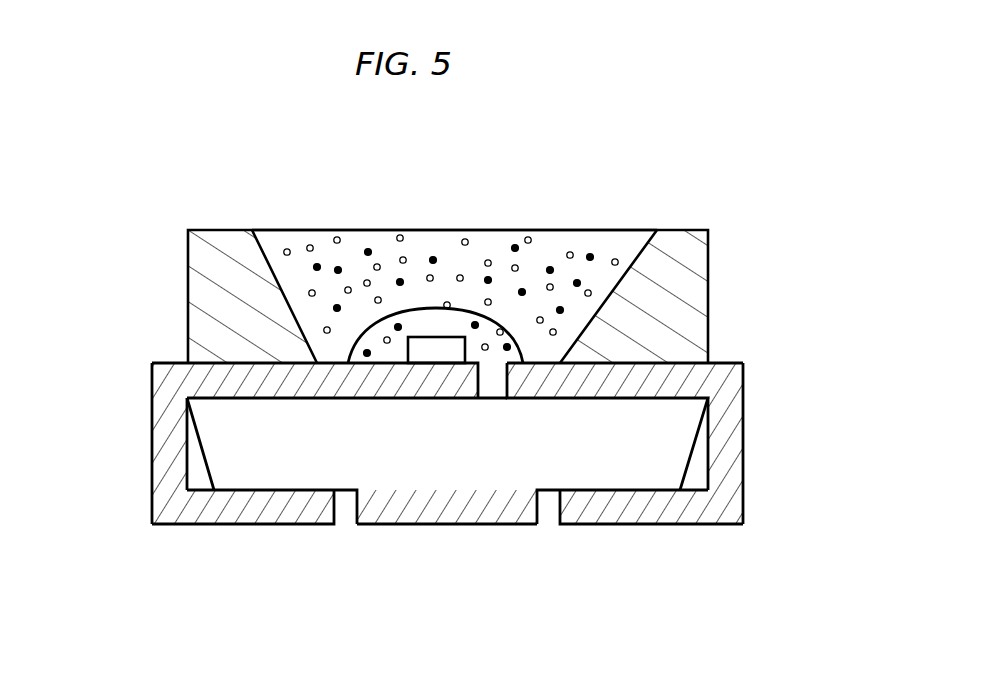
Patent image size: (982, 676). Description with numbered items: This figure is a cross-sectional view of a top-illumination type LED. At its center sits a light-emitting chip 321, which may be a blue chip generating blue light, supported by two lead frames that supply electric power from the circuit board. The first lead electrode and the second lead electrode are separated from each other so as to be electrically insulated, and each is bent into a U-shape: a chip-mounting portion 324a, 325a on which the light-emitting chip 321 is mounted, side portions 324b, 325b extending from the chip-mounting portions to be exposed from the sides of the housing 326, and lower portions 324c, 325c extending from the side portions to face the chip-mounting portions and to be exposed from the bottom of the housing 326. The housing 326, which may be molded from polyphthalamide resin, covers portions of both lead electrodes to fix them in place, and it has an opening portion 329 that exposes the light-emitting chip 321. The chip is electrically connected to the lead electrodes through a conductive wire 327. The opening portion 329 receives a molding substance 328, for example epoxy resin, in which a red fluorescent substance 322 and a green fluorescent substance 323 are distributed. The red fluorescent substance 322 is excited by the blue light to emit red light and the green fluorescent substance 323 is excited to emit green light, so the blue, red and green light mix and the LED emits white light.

The light-emitting chip 321 is at (428, 345).
The red fluorescent substance 322 is at (465, 240).
The green fluorescent substance 323 is at (515, 240).
The chip-mounting portion 324a is at (307, 383).
The side portion 324b is at (157, 440).
The lower portion 324c is at (242, 505).
The chip-mounting portion 325a is at (610, 383).
The side portion 325b is at (747, 453).
The lower portion 325c is at (672, 495).
The housing 326 is at (706, 313).
The conductive wire 327 is at (390, 305).
The molding substance 328 is at (418, 240).
The opening portion 329 is at (265, 237).